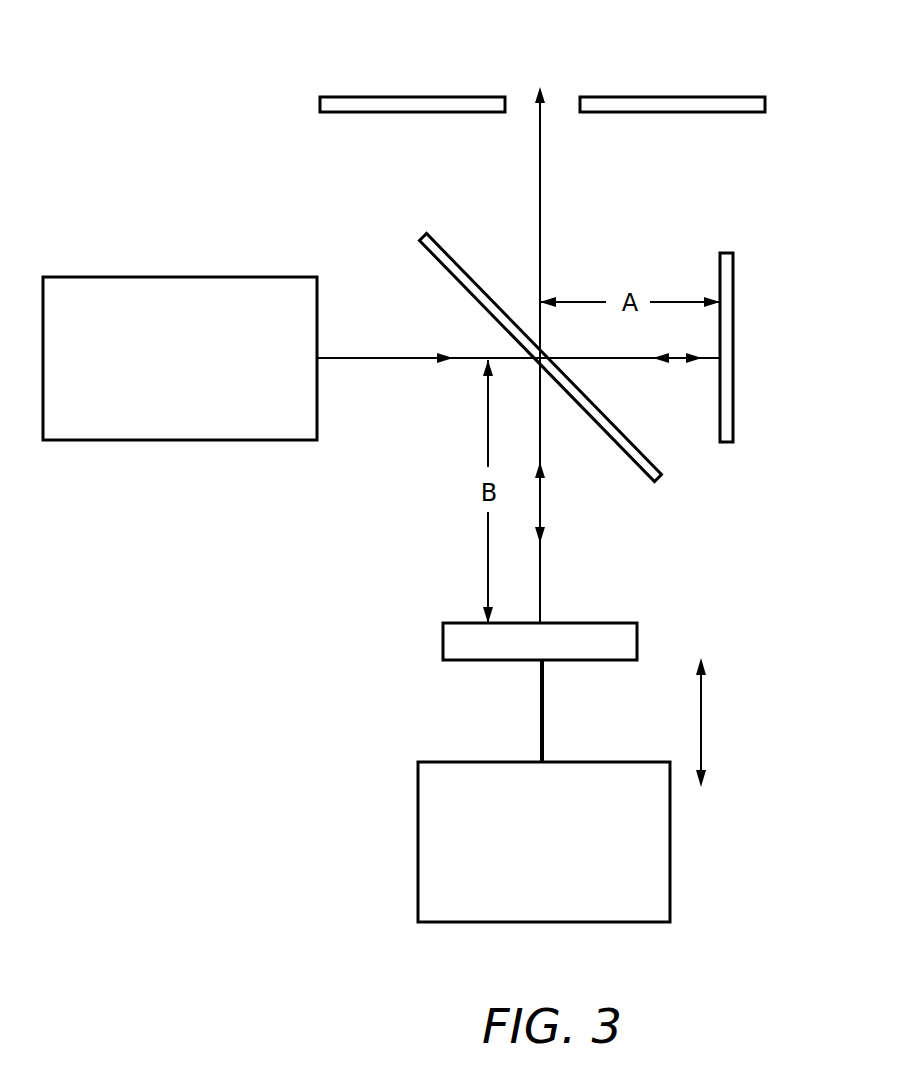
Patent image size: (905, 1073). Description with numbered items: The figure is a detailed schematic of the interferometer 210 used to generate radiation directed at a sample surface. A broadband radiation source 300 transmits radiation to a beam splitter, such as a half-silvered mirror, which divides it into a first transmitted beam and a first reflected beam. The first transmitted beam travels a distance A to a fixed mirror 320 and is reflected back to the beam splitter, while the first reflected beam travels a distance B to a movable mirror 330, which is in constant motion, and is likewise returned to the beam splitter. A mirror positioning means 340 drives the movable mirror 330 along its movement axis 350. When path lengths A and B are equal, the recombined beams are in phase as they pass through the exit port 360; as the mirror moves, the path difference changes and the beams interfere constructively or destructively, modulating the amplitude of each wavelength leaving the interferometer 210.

The interferometer 210 is at (216, 629).
The broadband radiation source 300 is at (317, 398).
The fixed mirror 320 is at (733, 410).
The movable mirror 330 is at (443, 641).
The mirror positioning means 340 is at (418, 836).
The movement axis 350 is at (703, 727).
The exit port 360 is at (556, 103).